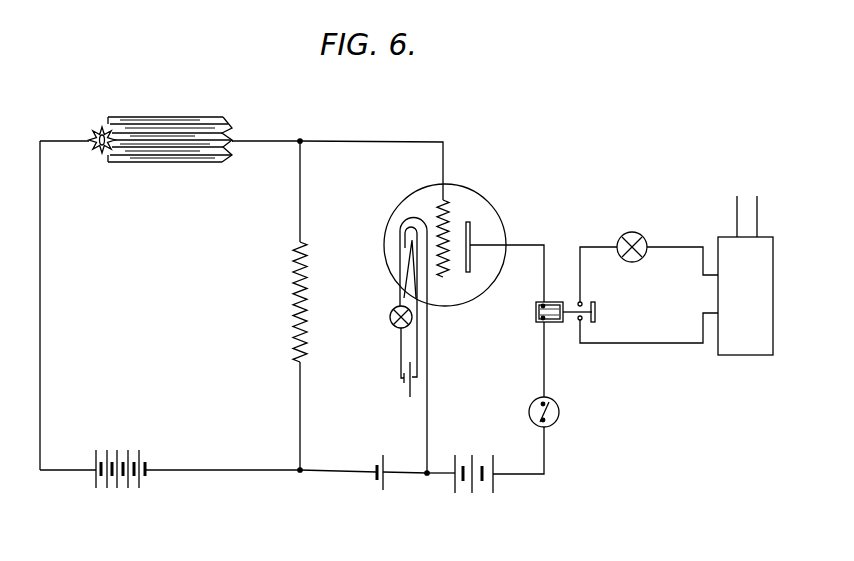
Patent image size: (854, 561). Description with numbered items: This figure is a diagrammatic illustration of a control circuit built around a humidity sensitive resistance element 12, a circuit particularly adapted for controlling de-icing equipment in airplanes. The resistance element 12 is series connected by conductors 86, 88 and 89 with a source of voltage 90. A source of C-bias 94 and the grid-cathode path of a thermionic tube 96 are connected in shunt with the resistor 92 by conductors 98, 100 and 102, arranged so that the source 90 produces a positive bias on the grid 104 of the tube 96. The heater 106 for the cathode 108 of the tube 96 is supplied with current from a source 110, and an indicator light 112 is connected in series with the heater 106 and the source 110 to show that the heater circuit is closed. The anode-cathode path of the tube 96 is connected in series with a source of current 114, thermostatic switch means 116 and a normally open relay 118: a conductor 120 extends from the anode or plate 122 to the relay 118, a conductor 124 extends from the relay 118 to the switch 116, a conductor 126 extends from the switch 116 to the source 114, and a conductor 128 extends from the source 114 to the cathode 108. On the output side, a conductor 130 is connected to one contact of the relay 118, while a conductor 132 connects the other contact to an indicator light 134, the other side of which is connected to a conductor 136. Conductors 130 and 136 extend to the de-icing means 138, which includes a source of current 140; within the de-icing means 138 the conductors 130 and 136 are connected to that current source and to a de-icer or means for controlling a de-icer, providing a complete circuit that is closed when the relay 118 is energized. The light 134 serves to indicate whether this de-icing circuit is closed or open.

The resistance element 12 is at (200, 118).
The conductor 86 is at (42, 398).
The conductor 88 is at (275, 140).
The conductor 89 is at (226, 471).
The source of voltage 90 is at (130, 488).
The resistor 92 is at (304, 295).
The source of C-bias 94 is at (382, 490).
The thermionic tube 96 is at (462, 194).
The conductor 98 is at (327, 471).
The conductor 100 is at (429, 413).
The conductor 102 is at (382, 141).
The grid 104 is at (452, 216).
The heater 106 is at (410, 246).
The cathode 108 is at (404, 228).
The source 110 is at (405, 386).
The indicator light 112 is at (389, 318).
The source of current 114 is at (485, 493).
The thermostatic switch means 116 is at (560, 412).
The normally open relay 118 is at (548, 303).
The conductor 120 is at (524, 244).
The anode or plate 122 is at (473, 232).
The conductor 124 is at (545, 376).
The conductor 126 is at (545, 453).
The conductor 128 is at (440, 474).
The conductor 130 is at (710, 311).
The conductor 132 is at (581, 283).
The indicator light 134 is at (636, 231).
The conductor 136 is at (710, 283).
The de-icing means 138 is at (767, 372).
The source of current 140 is at (746, 206).